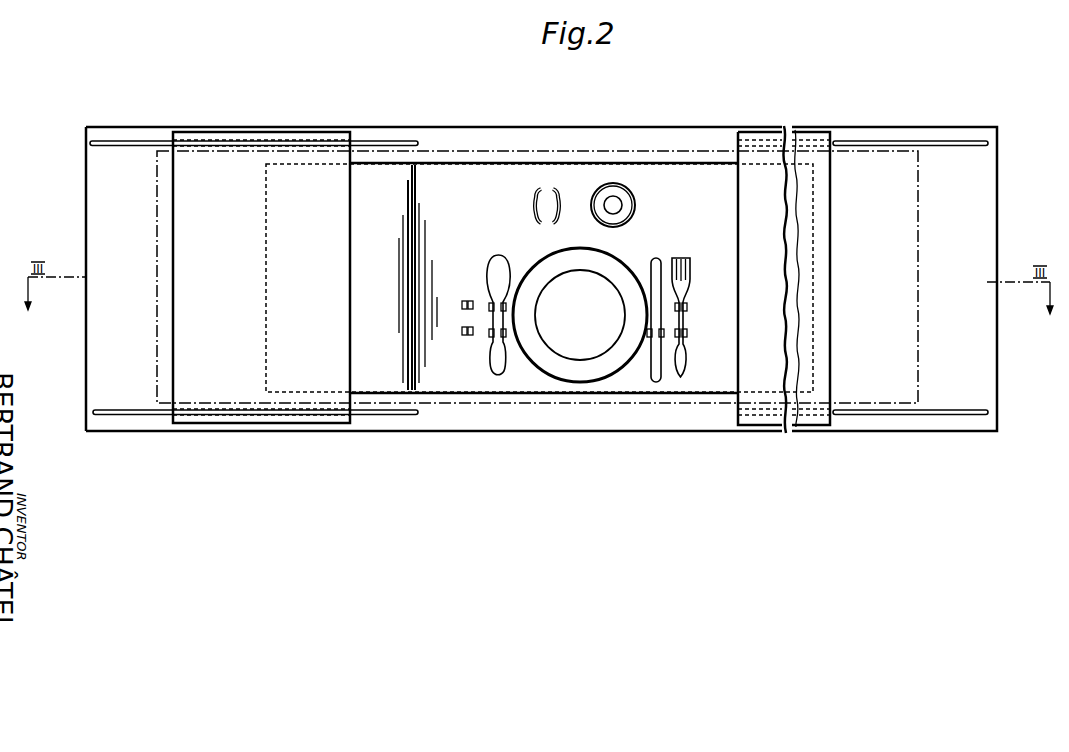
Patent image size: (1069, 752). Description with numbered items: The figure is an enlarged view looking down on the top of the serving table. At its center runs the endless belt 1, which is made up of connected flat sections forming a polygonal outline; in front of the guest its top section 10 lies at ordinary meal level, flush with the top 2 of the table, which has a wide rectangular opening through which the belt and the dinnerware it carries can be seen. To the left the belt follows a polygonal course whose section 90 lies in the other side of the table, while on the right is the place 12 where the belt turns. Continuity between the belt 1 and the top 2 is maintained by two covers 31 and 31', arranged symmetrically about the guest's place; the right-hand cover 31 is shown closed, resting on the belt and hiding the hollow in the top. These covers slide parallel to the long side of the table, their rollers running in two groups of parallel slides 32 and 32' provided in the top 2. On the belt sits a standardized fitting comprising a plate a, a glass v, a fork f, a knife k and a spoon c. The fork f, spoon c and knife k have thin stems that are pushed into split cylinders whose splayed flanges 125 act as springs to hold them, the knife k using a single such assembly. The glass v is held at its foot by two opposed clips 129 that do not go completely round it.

The endless belt 1 is at (522, 382).
The top of the table 2 is at (107, 226).
The top section 10 is at (453, 185).
The place where the belt turns 12 is at (918, 246).
The cover 31 is at (785, 298).
The cover 31' is at (261, 257).
The parallel slides 32 is at (910, 285).
The parallel slides 32' is at (254, 278).
The belt section 90 is at (377, 187).
The splayed flanges 125 is at (462, 328).
The clips 129 is at (531, 205).
The plate a is at (595, 263).
The spoon c is at (497, 265).
The knife k is at (656, 262).
The fork f is at (690, 286).
The glass v is at (627, 205).